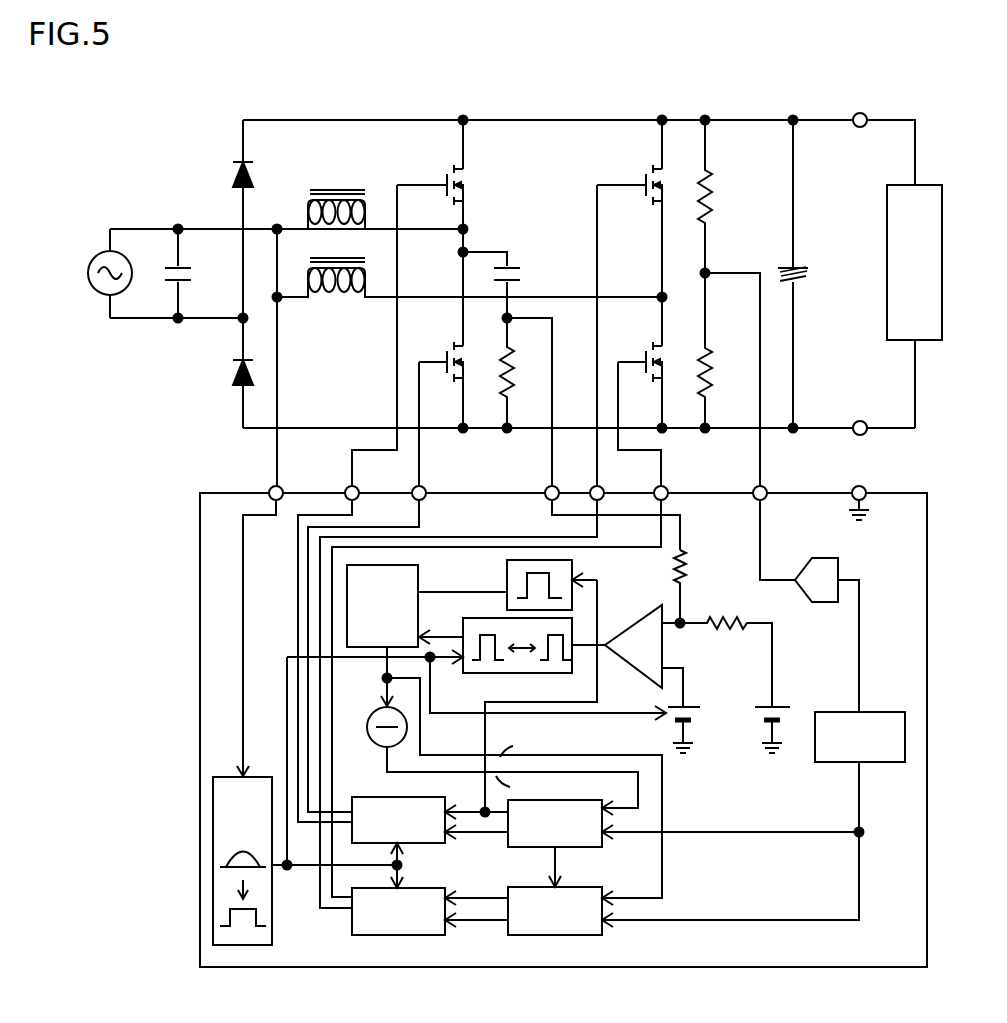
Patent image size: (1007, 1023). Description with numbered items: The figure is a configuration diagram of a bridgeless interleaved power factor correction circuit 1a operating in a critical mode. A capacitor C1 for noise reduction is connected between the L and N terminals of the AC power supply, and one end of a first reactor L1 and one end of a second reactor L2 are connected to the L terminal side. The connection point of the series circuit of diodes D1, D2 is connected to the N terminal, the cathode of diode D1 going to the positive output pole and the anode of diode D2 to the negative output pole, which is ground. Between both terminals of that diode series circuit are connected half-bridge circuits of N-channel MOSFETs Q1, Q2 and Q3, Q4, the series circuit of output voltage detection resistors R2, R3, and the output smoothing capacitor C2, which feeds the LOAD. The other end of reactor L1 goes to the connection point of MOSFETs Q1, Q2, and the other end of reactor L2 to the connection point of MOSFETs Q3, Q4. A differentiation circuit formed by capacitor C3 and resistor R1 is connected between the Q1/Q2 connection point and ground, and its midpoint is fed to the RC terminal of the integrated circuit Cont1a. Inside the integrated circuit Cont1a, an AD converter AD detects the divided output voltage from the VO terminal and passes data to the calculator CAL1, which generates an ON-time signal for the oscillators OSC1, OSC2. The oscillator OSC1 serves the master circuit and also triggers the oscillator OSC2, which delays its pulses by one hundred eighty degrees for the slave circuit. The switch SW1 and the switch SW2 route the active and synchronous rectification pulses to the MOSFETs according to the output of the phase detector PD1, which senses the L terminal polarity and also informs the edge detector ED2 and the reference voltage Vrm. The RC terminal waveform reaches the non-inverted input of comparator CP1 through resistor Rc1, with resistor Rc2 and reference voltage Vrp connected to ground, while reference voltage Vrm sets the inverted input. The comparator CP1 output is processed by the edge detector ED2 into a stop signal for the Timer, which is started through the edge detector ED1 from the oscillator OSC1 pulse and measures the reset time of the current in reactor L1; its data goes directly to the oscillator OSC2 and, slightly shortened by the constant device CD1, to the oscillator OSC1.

The bridgeless interleaved power factor correction circuit 1a is at (554, 90).
The integrated circuit Cont1a is at (200, 562).
The diode D1 is at (229, 176).
The diode D2 is at (229, 374).
The capacitor for noise reduction C1 is at (187, 273).
The output smoothing capacitor C2 is at (797, 274).
The capacitor C3 is at (503, 285).
The first reactor L1 is at (330, 201).
The second reactor L2 is at (469, 270).
The N-channel MOSFET Q1 is at (446, 174).
The N-channel MOSFET Q2 is at (453, 328).
The N-channel MOSFET Q3 is at (643, 208).
The N-channel MOSFET Q4 is at (653, 362).
The resistor R1 is at (519, 373).
The output voltage detection resistor R2 is at (717, 196).
The output voltage detection resistor R3 is at (717, 350).
The resistor Rc1 is at (695, 586).
The resistor Rc2 is at (726, 650).
The comparator CP1 is at (633, 644).
The edge detector ED1 is at (507, 573).
The edge detector ED2 is at (520, 675).
The constant device CD1 is at (374, 744).
The phase detector PD1 is at (242, 861).
The switch SW1 is at (398, 820).
The switch SW2 is at (398, 911).
The oscillator OSC1 is at (555, 823).
The oscillator OSC2 is at (555, 911).
The calculator CAL1 is at (860, 737).
The element Timer is at (382, 606).
The AD converter AD is at (816, 580).
The reference voltage Vrm is at (689, 710).
The reference voltage Vrp is at (778, 718).
The load LOAD is at (914, 262).